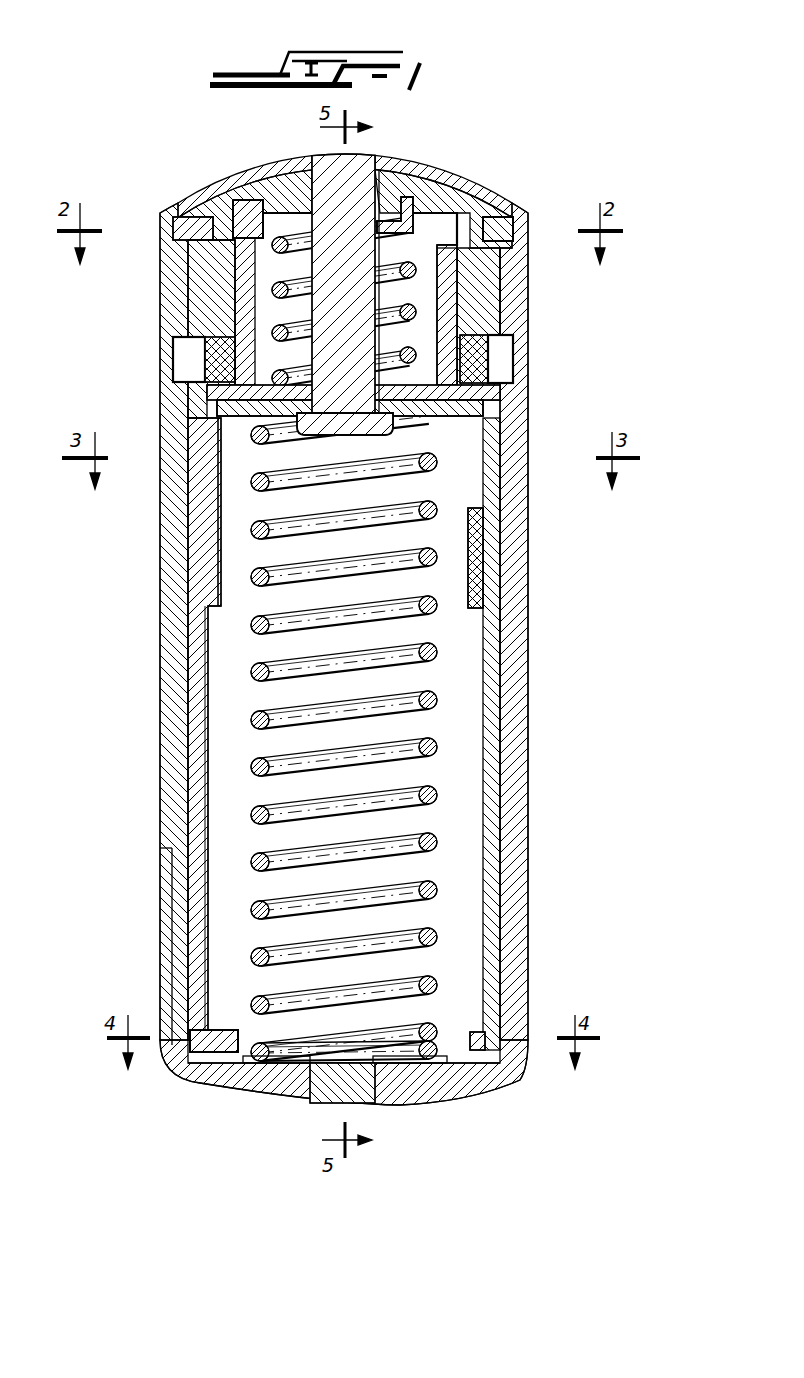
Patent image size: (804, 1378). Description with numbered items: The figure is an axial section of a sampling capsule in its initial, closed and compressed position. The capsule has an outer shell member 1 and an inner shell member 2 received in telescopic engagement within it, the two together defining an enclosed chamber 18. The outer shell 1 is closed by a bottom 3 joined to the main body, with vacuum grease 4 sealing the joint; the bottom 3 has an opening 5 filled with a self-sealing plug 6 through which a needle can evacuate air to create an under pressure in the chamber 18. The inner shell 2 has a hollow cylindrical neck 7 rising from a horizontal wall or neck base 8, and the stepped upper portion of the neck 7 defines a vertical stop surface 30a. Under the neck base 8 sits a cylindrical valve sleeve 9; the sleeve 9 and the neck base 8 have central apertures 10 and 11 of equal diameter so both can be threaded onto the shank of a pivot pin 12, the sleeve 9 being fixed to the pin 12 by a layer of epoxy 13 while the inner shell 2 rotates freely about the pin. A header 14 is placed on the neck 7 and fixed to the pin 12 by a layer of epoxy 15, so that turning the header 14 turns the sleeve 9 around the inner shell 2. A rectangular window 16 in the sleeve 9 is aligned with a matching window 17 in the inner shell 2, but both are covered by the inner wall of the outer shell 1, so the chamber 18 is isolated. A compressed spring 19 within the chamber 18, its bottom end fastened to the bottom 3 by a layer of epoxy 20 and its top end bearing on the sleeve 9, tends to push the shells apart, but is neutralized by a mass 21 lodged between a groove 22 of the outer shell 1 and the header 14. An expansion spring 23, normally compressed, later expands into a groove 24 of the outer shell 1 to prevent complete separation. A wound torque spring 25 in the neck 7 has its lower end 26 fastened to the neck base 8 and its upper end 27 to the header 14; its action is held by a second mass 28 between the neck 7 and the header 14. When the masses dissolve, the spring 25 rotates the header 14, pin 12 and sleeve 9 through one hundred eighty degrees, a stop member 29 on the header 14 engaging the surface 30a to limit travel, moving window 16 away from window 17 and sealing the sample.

The outer shell member 1 is at (178, 627).
The inner shell member 2 is at (200, 523).
The bottom 3 is at (167, 877).
The vacuum grease 4 is at (172, 927).
The opening 5 is at (307, 1100).
The plug 6 is at (367, 1100).
The neck 7 is at (450, 302).
The neck base 8 is at (455, 360).
The valve sleeve 9 is at (453, 400).
The central aperture 10 is at (462, 396).
The central aperture 11 is at (520, 228).
The pivot pin 12 is at (330, 182).
The layer of epoxy 13 is at (395, 435).
The header 14 is at (290, 178).
The layer of epoxy 15 is at (382, 205).
The window 16 is at (492, 486).
The window 17 is at (492, 433).
The chamber 18 is at (462, 807).
The spring 19 is at (260, 718).
The layer of epoxy 20 is at (440, 1070).
The mass 21 is at (200, 215).
The groove 22 is at (503, 215).
The expansion spring 23 is at (202, 1052).
The groove 24 is at (503, 362).
The torque spring 25 is at (280, 290).
The lower end 26 is at (275, 372).
The upper end 27 is at (416, 215).
The mass 28 is at (217, 370).
The stop member 29 is at (247, 213).
The stop surface 30a is at (445, 246).